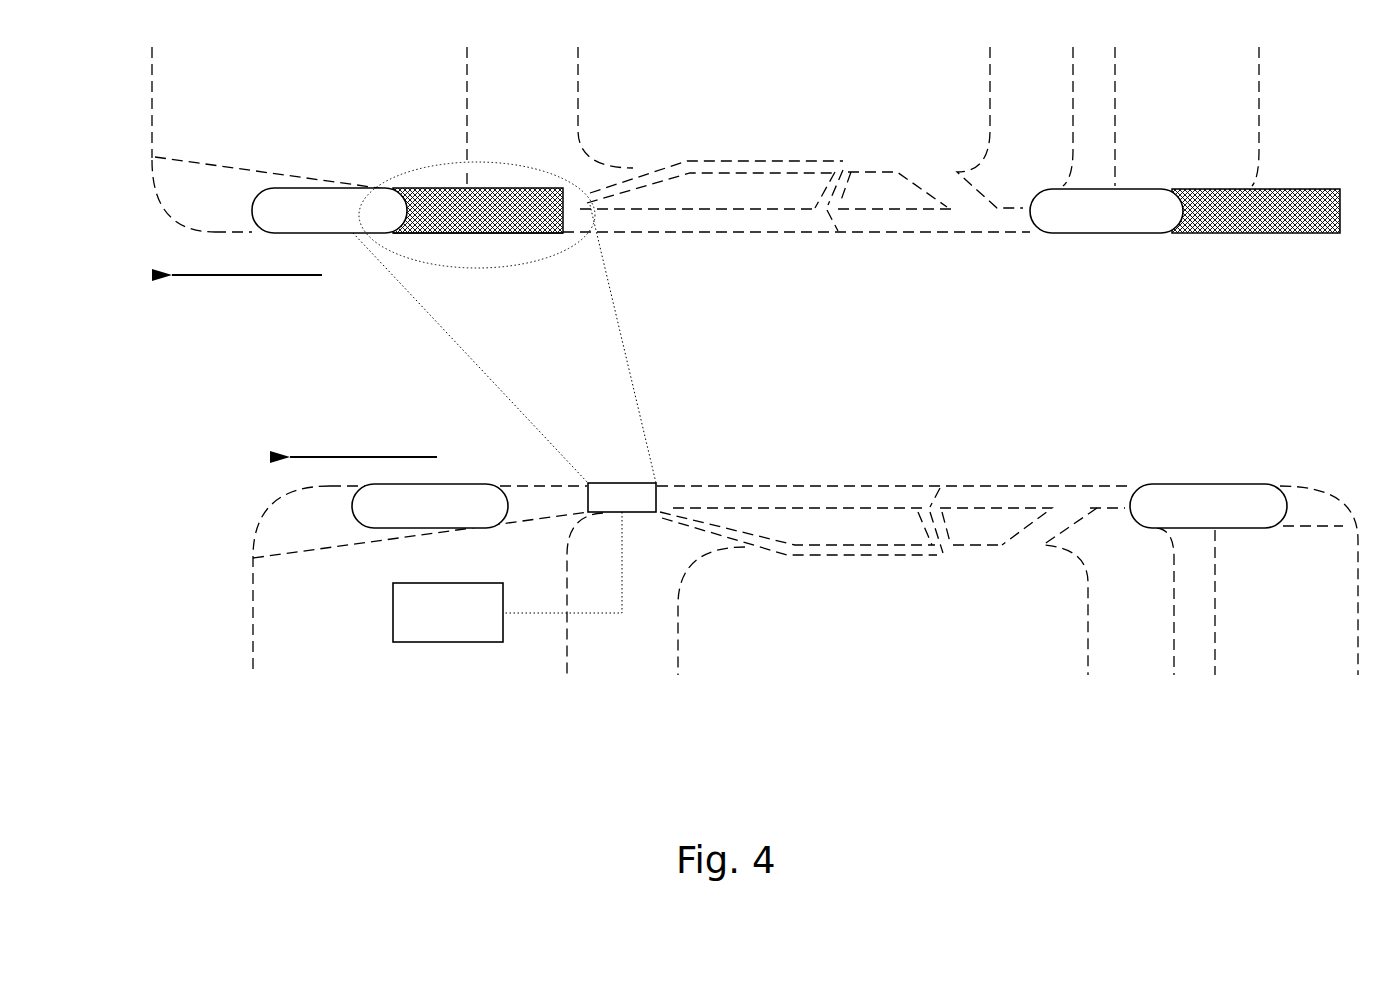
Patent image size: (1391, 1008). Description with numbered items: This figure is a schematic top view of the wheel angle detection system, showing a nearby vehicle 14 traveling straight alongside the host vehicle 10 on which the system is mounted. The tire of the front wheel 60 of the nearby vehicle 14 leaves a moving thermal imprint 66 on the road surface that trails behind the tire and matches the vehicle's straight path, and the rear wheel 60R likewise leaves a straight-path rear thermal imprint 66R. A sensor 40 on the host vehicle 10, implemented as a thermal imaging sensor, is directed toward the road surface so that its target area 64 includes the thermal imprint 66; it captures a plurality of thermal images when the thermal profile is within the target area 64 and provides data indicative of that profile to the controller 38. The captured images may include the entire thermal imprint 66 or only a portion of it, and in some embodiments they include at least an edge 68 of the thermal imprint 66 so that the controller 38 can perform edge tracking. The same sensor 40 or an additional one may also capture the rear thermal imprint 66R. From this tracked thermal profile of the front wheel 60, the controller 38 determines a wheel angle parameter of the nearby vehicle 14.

The vehicle 10 is at (842, 558).
The nearby vehicle 14 is at (467, 93).
The controller 38 is at (462, 625).
The sensor 40 is at (622, 500).
The front wheel 60 is at (293, 234).
The rear wheel 60R is at (1107, 210).
The target area 64 is at (470, 268).
The thermal imprint 66 is at (438, 191).
The rear tire thermal imprint 66R is at (1217, 189).
The edge 68 is at (527, 234).